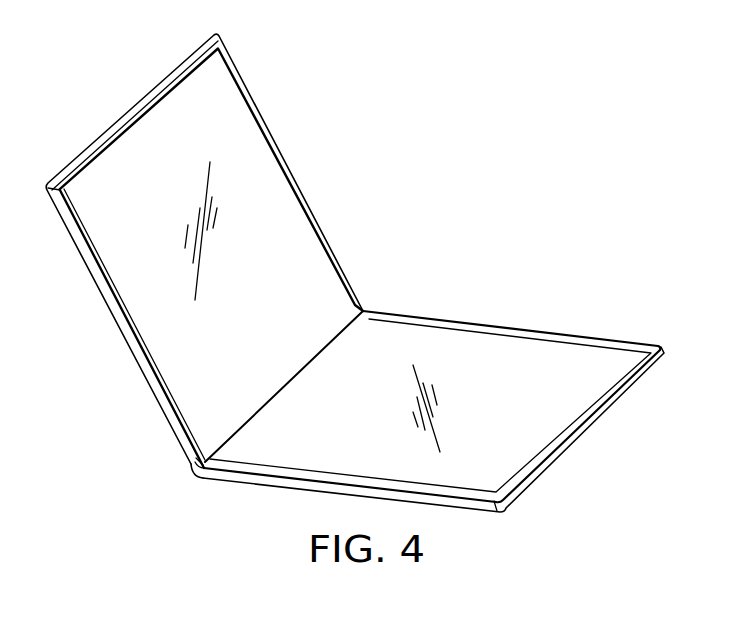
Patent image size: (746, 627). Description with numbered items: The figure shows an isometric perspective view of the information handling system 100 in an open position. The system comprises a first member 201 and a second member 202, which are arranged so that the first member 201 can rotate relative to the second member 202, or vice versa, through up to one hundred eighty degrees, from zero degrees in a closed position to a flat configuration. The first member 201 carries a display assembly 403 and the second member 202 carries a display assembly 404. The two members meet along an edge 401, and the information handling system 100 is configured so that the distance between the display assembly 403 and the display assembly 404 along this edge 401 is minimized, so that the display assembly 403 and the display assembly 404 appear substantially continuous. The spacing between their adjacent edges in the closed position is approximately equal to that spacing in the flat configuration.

The information handling system 100 is at (515, 95).
The first member 201 is at (119, 122).
The second member 202 is at (598, 428).
The edge 401 is at (291, 380).
The display assembly 403 is at (265, 195).
The display assembly 404 is at (522, 362).